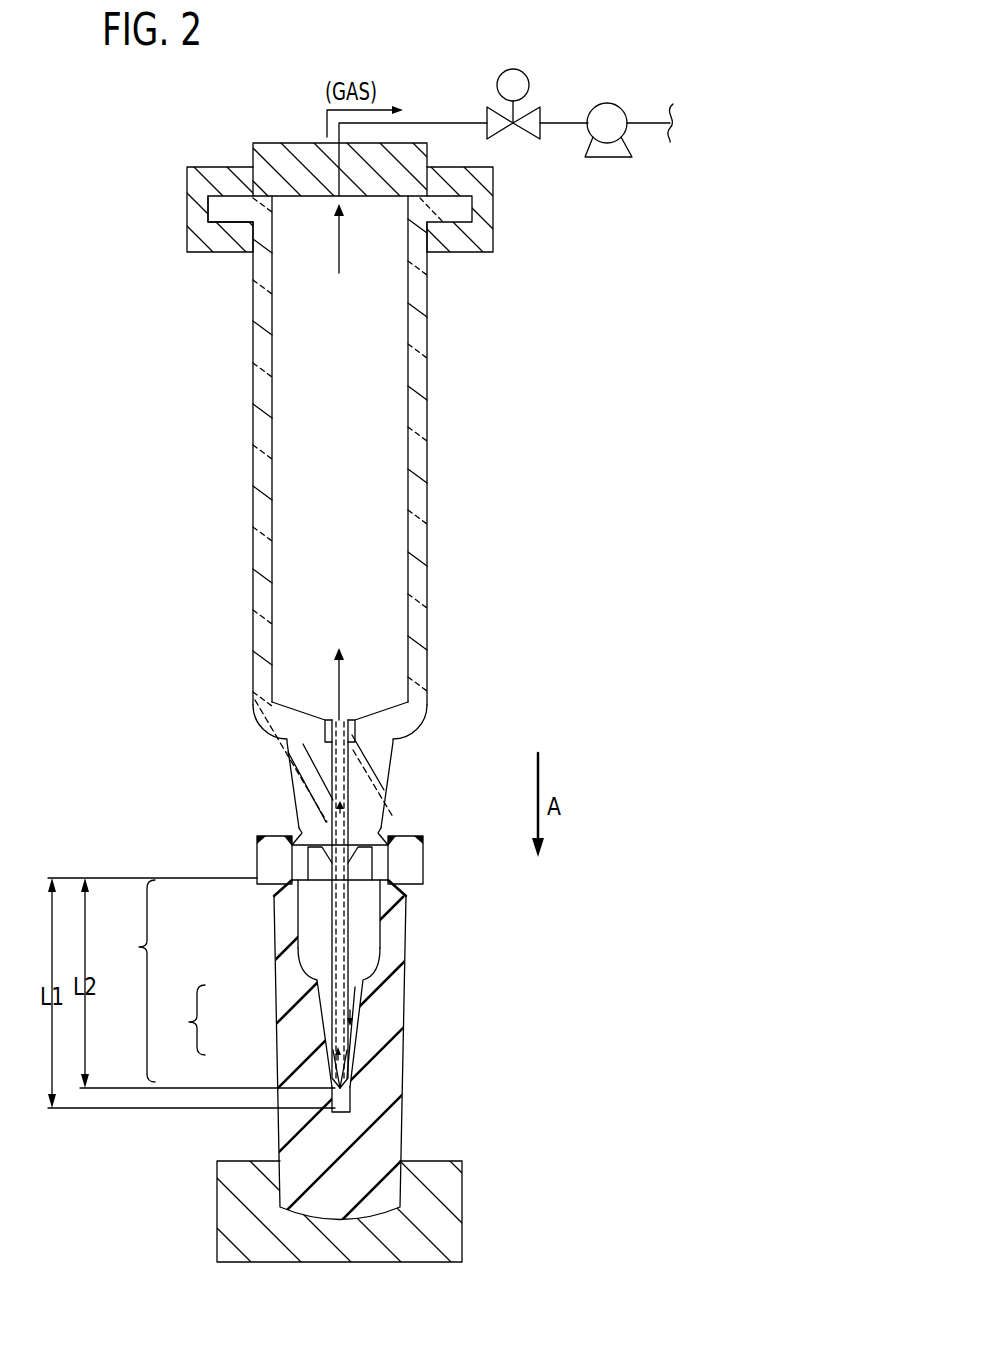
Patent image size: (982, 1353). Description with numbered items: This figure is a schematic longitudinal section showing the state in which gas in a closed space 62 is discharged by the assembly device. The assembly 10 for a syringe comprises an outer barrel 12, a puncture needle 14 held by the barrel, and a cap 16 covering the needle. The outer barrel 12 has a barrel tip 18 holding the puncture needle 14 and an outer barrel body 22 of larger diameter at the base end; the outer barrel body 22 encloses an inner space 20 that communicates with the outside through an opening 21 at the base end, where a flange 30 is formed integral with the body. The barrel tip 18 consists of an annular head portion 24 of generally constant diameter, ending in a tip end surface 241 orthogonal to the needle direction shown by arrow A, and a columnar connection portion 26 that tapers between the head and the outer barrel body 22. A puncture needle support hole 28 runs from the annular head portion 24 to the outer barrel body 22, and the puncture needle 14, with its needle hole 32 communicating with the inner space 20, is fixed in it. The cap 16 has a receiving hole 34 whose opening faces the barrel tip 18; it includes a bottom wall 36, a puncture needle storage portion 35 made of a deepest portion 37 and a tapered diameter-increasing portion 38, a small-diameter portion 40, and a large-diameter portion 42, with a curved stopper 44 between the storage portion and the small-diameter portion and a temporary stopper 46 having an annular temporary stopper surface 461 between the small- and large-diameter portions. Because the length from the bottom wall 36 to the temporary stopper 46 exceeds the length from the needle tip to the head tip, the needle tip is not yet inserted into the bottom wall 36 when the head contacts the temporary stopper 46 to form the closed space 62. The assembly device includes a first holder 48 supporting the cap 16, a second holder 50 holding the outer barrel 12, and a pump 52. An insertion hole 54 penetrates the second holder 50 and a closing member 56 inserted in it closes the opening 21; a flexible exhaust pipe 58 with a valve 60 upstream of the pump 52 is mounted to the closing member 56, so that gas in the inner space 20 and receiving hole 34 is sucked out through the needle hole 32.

The assembly for a syringe 10 is at (460, 723).
The outer barrel 12 is at (433, 436).
The puncture needle 14 is at (348, 824).
The cap 16 is at (404, 1078).
The barrel tip 18 is at (205, 735).
The inner space 20 is at (272, 407).
The opening 21 is at (403, 208).
The outer barrel body 22 is at (418, 522).
The annular head portion 24 is at (290, 835).
The connection portion 26 is at (290, 787).
The puncture needle support hole 28 is at (340, 783).
The flange 30 is at (208, 212).
The needle hole 32 is at (347, 757).
The receiving hole 34 is at (133, 981).
The puncture needle storage portion 35 is at (252, 1036).
The bottom wall 36 is at (347, 1110).
The deepest portion 37 is at (342, 1080).
The tapered diameter-increasing portion 38 is at (338, 1022).
The small-diameter portion 40 is at (300, 930).
The large-diameter portion 42 is at (292, 866).
The stopper 44 is at (362, 958).
The temporary stopper 46 is at (382, 855).
The first holder 48 is at (462, 1198).
The second holder 50 is at (493, 230).
The pump 52 is at (613, 153).
The insertion hole 54 is at (253, 178).
The closing member 56 is at (253, 150).
The exhaust pipe 58 is at (460, 118).
The valve 60 is at (541, 111).
The closed space 62 is at (368, 919).
The tip end surface 241 is at (376, 880).
The temporary stopper surface 461 is at (388, 868).